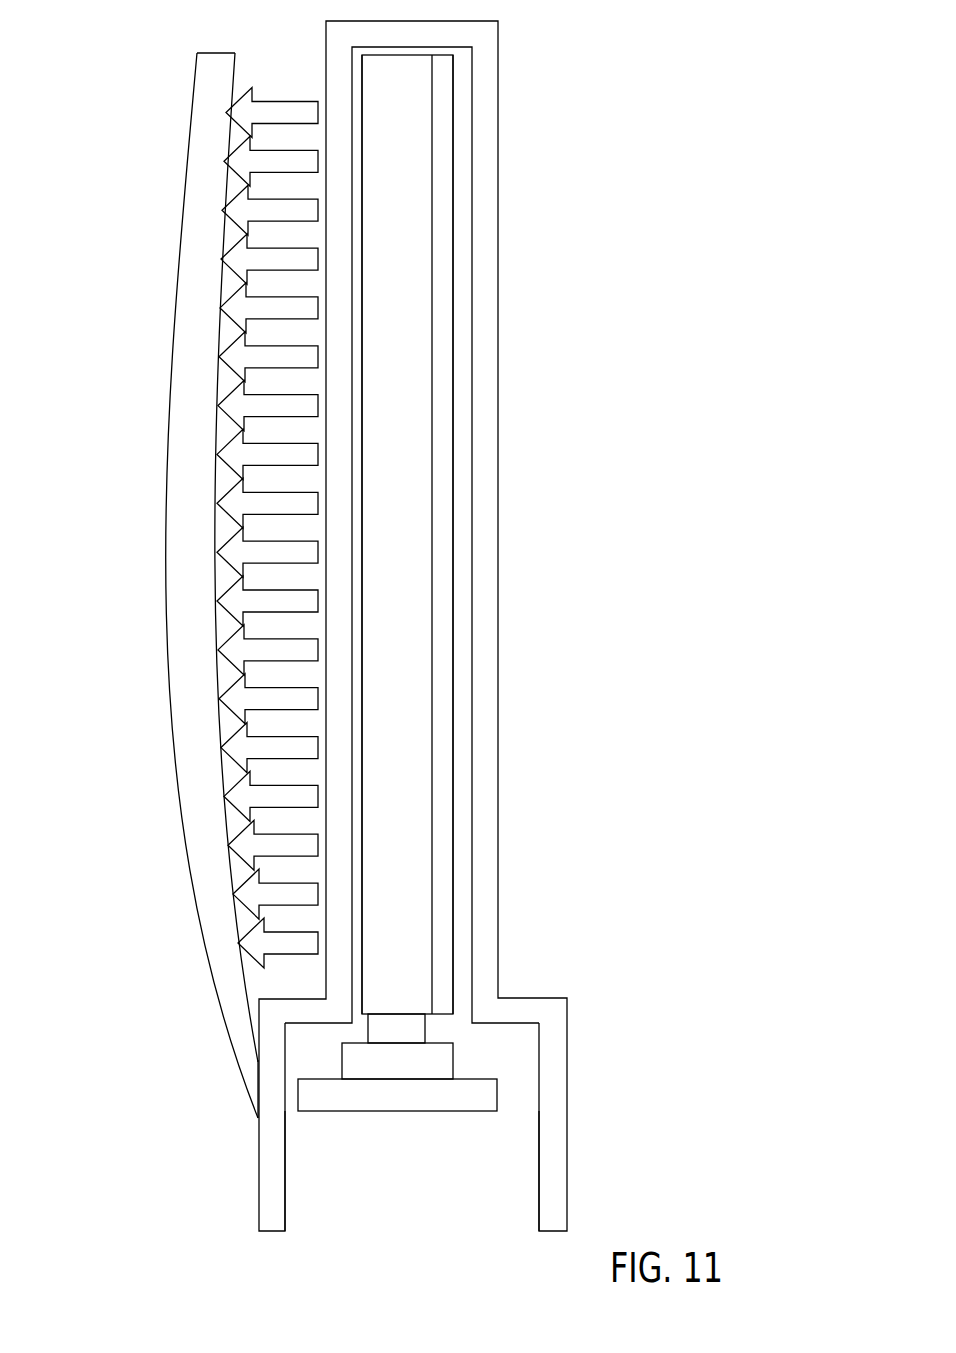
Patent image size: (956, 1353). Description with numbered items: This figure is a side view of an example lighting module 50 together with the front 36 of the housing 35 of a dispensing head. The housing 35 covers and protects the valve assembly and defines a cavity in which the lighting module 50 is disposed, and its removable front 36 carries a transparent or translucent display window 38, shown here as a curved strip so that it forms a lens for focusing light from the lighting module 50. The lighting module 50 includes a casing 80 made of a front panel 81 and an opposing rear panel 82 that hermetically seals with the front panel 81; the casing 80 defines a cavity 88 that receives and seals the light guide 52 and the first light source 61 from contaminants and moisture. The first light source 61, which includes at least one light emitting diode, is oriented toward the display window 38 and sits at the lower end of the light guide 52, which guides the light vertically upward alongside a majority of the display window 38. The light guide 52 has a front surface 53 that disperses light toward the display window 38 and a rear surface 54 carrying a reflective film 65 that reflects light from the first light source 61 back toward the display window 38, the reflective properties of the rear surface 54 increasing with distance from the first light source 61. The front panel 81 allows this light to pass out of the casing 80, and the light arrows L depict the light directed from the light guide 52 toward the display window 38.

The housing 35 is at (138, 585).
The front 36 is at (207, 977).
The display window 38 is at (193, 643).
The lighting module 50 is at (459, 626).
The light guide 52 is at (412, 271).
The front surface 53 is at (360, 383).
The rear surface 54 is at (432, 319).
The first light source 61 is at (413, 1028).
The reflective film 65 is at (445, 416).
The casing 80 is at (548, 973).
The front panel 81 is at (341, 58).
The rear panel 82 is at (493, 783).
The cavity 88 is at (431, 1178).
The light arrows L is at (234, 104).